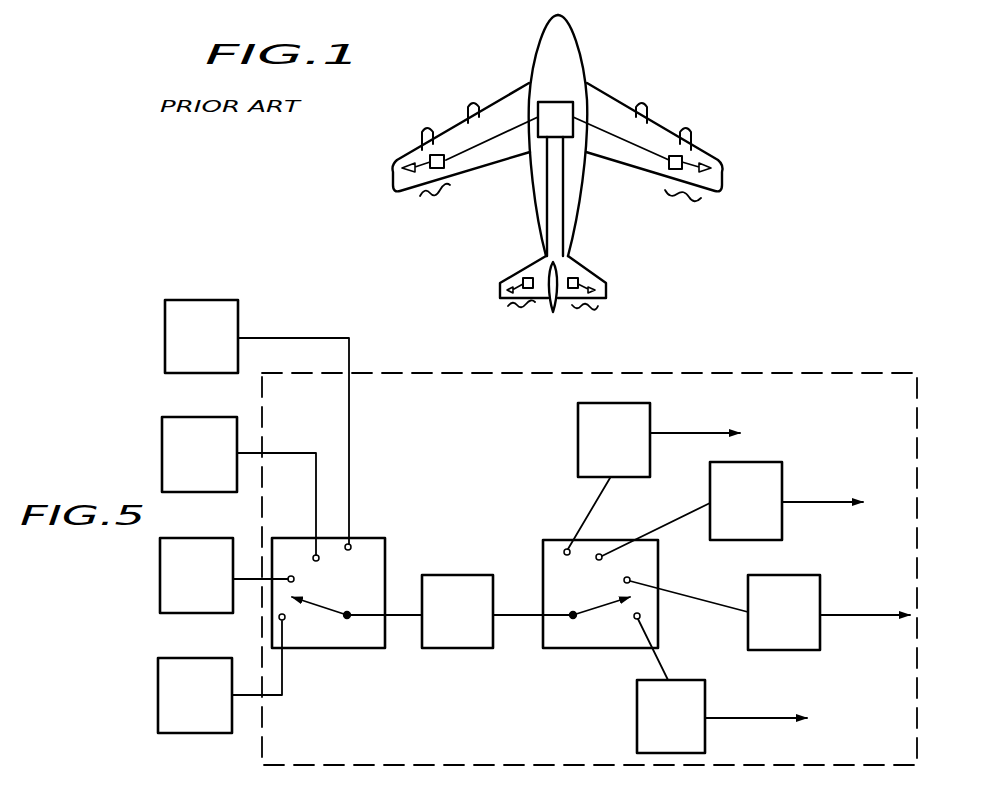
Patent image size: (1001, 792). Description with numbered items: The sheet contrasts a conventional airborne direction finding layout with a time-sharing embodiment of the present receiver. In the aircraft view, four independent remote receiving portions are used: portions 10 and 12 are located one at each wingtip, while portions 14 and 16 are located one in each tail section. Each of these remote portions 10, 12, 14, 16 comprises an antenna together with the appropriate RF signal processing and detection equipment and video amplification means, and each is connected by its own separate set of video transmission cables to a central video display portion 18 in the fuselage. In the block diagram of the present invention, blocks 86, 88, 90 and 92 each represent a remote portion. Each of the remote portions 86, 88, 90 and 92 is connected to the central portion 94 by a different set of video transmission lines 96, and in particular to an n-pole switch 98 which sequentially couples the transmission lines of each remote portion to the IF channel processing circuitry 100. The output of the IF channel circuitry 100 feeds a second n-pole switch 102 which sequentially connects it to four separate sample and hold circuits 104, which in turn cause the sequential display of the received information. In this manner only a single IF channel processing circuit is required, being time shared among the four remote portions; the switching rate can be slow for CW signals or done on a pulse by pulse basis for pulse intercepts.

In FIG. 1, the remote receiving portion 10 is at (428, 189).
In FIG. 1, the remote receiving portion 12 is at (686, 193).
In FIG. 1, the remote receiving portion 14 is at (518, 307).
In FIG. 1, the remote receiving portion 16 is at (583, 307).
In FIG. 1, the central video display portion 18 is at (562, 101).
In FIG. 5, the remote portion 86 is at (165, 350).
In FIG. 5, the remote portion 88 is at (162, 450).
In FIG. 5, the remote portion 90 is at (160, 579).
In FIG. 5, the remote portion 92 is at (158, 708).
In FIG. 5, the central portion 94 is at (795, 373).
In FIG. 5, the video transmission lines 96 is at (342, 318).
In FIG. 5, the n-pole switch 98 is at (398, 525).
In FIG. 5, the IF channel processing circuitry 100 is at (488, 560).
In FIG. 5, the second n-pole switch 102 is at (573, 650).
In FIG. 5, the sample and hold circuits 104 is at (652, 417).